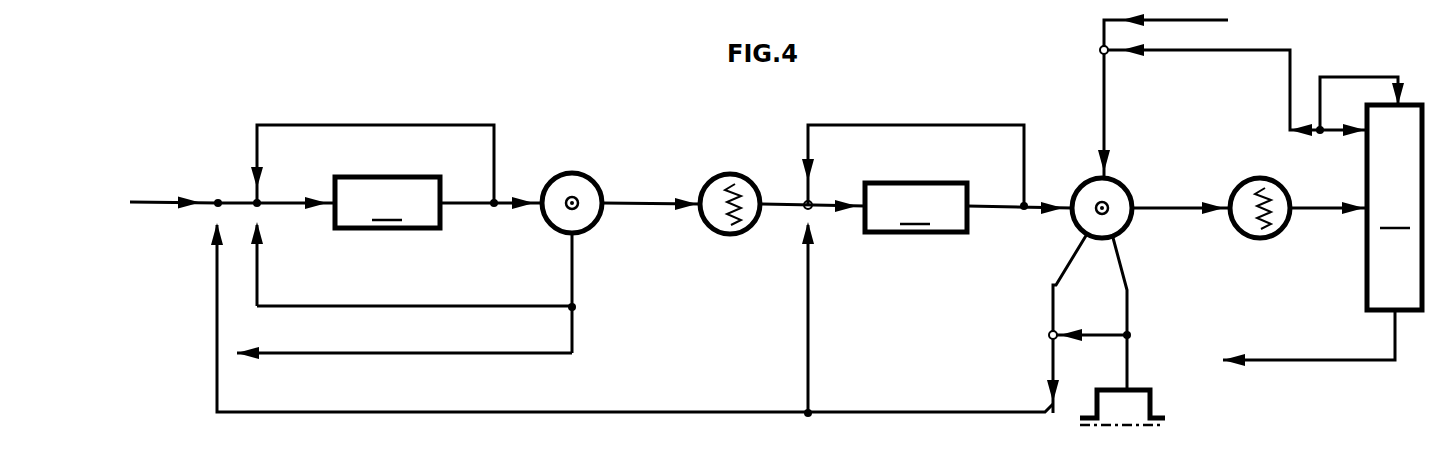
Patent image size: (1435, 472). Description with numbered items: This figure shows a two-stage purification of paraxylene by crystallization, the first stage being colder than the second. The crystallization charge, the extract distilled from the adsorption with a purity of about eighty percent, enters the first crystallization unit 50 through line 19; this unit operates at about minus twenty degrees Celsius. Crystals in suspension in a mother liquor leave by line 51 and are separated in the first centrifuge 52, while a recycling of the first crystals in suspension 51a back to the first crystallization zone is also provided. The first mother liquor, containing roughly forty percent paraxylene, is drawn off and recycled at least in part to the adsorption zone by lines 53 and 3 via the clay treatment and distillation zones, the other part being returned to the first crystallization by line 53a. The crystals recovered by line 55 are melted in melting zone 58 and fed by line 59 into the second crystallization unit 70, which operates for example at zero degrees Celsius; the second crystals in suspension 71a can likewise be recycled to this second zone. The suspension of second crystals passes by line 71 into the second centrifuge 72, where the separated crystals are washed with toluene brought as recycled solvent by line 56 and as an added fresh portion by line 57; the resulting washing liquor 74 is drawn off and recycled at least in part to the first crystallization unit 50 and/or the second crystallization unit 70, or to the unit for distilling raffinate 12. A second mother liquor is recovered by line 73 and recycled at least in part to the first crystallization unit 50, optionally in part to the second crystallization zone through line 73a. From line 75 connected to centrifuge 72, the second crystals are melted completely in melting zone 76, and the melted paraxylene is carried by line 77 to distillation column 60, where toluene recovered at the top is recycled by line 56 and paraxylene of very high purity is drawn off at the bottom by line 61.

The line 19 is at (140, 201).
The first crystals in suspension recycle 51a is at (362, 125).
The first crystallization unit 50 is at (387, 202).
The line 51 is at (507, 202).
The first centrifuge 52 is at (562, 181).
The line 55 is at (630, 202).
The melting zone 58 is at (712, 184).
The line 59 is at (787, 203).
The second crystals in suspension recycle 71a is at (880, 125).
The second crystallization unit 70 is at (916, 207).
The line 71 is at (1000, 209).
The second centrifuge 72 is at (1087, 177).
The line 57 is at (1213, 20).
The line 56 is at (1220, 52).
The line 75 is at (1163, 207).
The melting zone 76 is at (1243, 182).
The line 77 is at (1323, 210).
The distillation column 60 is at (1394, 207).
The line 61 is at (1293, 359).
The washing liquor 74 is at (1128, 290).
The unit for distilling raffinate 12 is at (1150, 397).
The line 53a is at (386, 306).
The line 53 is at (572, 278).
The line 3 is at (572, 339).
The line 73 is at (215, 318).
The line 73a is at (807, 350).